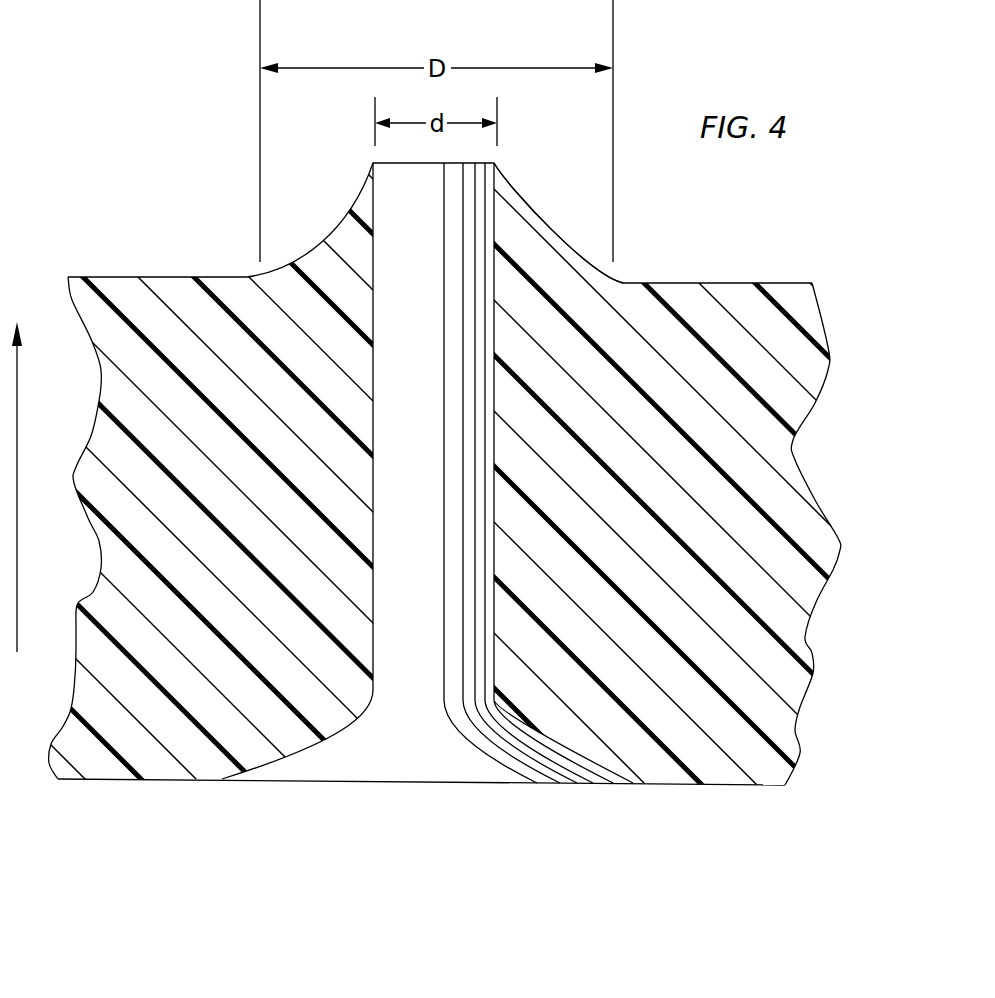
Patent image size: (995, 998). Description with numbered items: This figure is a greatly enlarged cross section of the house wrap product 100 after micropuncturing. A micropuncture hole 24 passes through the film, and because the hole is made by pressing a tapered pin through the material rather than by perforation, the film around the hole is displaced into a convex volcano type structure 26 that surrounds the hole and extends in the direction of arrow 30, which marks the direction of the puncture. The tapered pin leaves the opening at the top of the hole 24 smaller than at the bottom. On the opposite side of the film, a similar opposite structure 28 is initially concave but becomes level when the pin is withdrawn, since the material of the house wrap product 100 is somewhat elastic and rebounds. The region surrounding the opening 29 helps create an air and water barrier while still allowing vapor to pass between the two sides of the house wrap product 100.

The house wrap product 100 is at (810, 423).
The micropuncture hole 24 is at (498, 166).
The volcano type structure 26 is at (541, 229).
The opposite structure 28 is at (282, 764).
The opening 29 is at (432, 692).
The arrow 30 is at (17, 622).